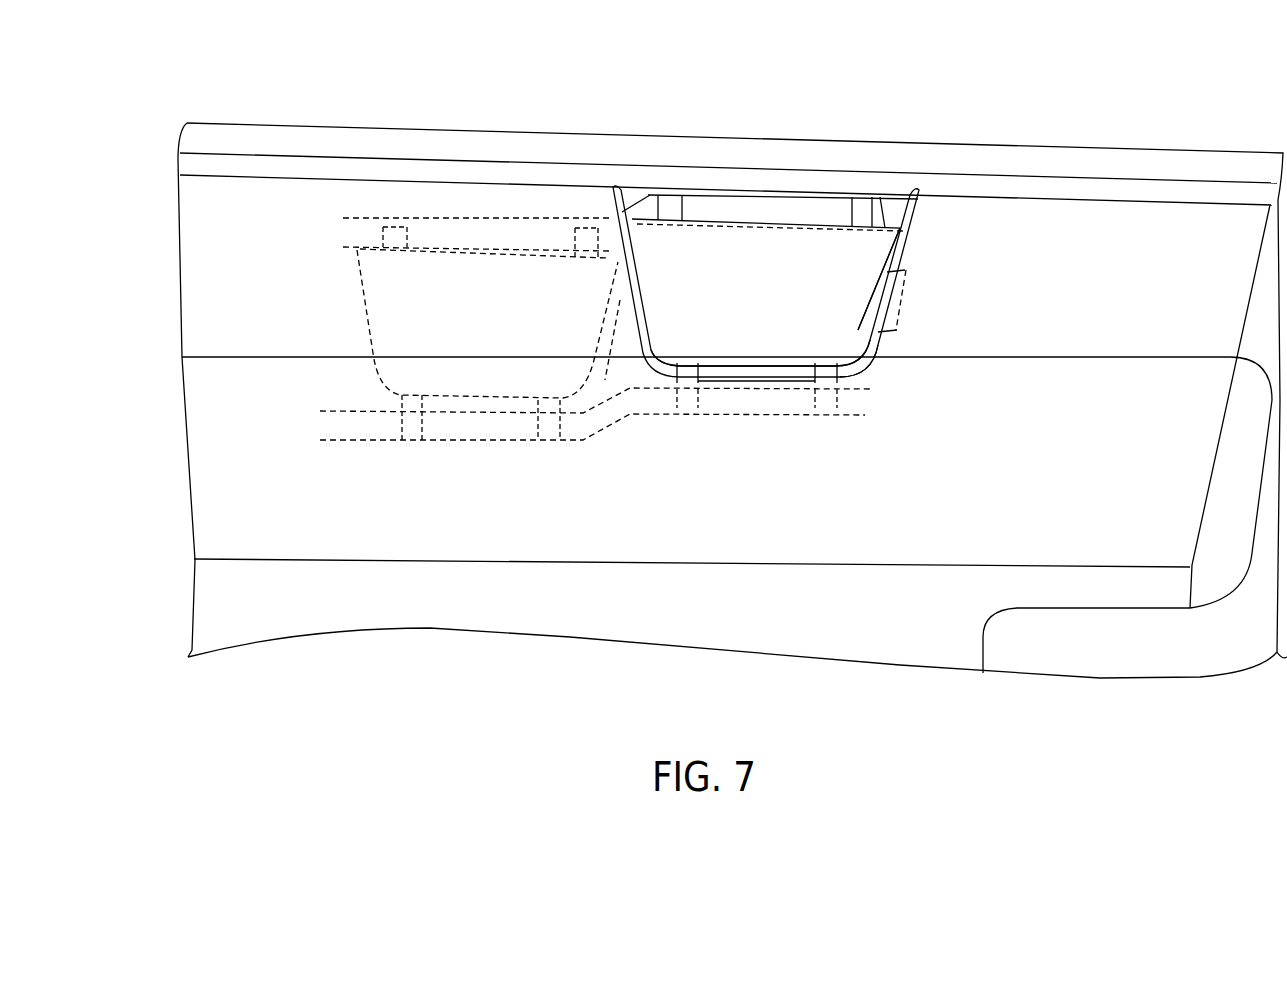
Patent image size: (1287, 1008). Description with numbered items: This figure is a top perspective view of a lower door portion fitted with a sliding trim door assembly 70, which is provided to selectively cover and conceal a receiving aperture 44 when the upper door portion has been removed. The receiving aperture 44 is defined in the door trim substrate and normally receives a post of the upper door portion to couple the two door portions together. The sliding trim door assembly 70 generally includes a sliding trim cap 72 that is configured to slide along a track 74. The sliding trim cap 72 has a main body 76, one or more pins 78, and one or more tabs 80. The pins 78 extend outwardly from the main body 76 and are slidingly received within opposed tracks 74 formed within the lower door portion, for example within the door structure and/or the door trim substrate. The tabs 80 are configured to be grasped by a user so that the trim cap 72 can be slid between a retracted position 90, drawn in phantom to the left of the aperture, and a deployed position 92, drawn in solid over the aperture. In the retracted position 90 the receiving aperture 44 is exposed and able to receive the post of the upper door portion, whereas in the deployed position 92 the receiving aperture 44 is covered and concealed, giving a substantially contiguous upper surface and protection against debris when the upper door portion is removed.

The sliding trim door assembly 70 is at (582, 116).
The sliding trim cap 72 is at (729, 246).
The track 74 is at (463, 215).
The main body 76 is at (788, 240).
The pin 78 is at (667, 193).
The receiving aperture 44 is at (897, 228).
The tab 80 is at (892, 300).
The retracted position 90 is at (360, 363).
The deployed position 92 is at (896, 368).